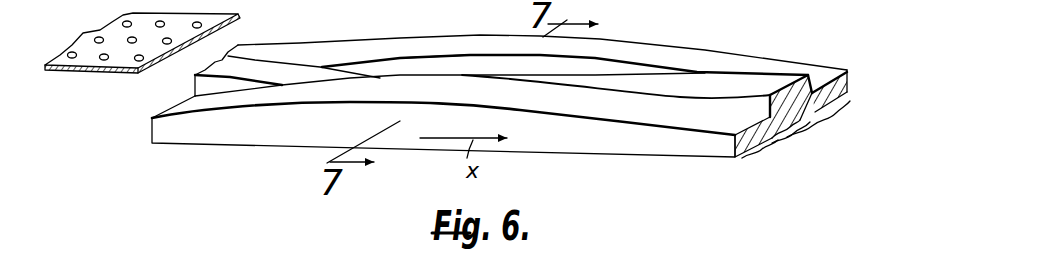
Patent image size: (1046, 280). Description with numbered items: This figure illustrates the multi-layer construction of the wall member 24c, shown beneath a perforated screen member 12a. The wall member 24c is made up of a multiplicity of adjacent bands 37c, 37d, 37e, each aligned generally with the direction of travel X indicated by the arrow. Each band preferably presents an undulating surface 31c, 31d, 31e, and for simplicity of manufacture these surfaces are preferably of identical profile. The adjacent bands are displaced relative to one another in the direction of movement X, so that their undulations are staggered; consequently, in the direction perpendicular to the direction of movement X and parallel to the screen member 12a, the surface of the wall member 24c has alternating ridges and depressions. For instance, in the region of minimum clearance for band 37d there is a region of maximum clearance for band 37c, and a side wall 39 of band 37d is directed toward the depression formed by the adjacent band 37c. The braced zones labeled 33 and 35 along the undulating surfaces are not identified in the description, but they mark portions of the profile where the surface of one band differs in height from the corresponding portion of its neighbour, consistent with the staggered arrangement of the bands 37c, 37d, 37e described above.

The screen member 12a is at (104, 75).
The wall member 24c is at (463, 33).
The undulating surface 31c is at (735, 126).
The undulating surface 31d is at (785, 80).
The undulating surface 31e is at (824, 76).
The flat zone of plate 33 is at (472, 63).
The curved zone of plate 35 is at (476, 63).
The band 37c is at (758, 162).
The band 37d is at (795, 142).
The band 37e is at (826, 121).
The side wall 39 is at (746, 98).